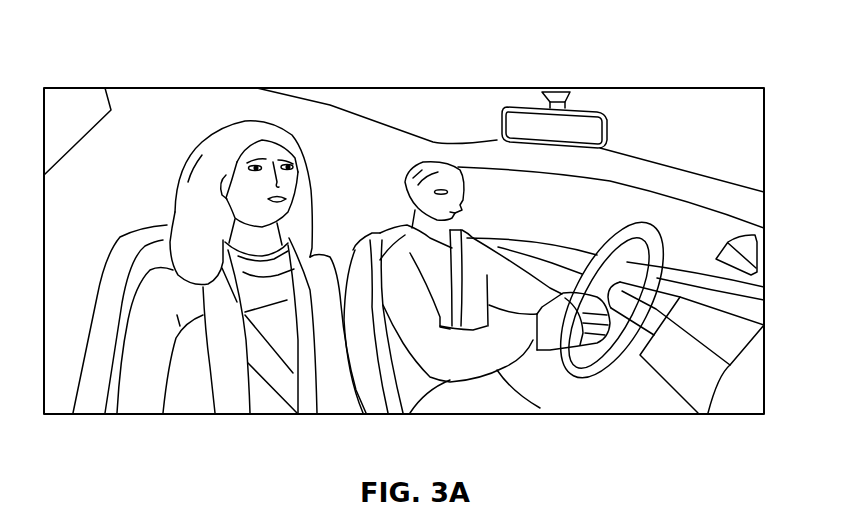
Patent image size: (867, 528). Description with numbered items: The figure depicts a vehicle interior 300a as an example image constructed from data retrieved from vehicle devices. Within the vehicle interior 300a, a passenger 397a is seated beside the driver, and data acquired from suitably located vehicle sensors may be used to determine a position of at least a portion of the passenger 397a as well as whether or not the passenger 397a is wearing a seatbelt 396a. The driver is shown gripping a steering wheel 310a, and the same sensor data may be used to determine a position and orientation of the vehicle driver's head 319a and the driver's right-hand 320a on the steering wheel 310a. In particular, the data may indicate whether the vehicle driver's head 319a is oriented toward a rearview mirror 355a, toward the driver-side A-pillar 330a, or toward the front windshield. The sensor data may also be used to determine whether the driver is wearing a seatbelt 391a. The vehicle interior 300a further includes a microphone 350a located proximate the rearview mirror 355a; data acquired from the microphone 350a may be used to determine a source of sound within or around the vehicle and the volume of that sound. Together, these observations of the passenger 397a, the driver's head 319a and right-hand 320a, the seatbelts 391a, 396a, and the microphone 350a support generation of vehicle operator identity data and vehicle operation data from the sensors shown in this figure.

The vehicle interior 300a is at (122, 64).
The steering wheel 310a is at (648, 226).
The vehicle driver's head 319a is at (439, 177).
The right-hand 320a is at (578, 330).
The driver-side A-pillar 330a is at (705, 192).
The microphone 350a is at (556, 90).
The rearview mirror 355a is at (588, 130).
The seatbelt 391a is at (455, 268).
The seatbelt 396a is at (270, 370).
The passenger 397a is at (150, 372).